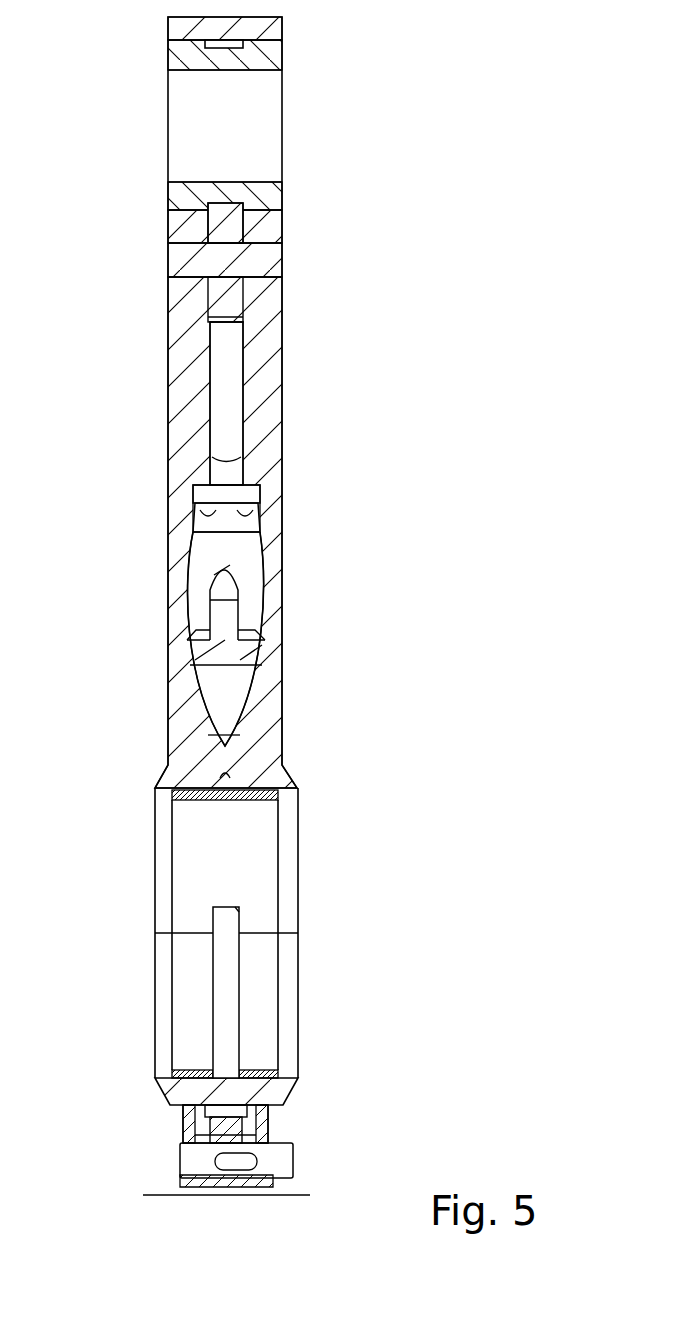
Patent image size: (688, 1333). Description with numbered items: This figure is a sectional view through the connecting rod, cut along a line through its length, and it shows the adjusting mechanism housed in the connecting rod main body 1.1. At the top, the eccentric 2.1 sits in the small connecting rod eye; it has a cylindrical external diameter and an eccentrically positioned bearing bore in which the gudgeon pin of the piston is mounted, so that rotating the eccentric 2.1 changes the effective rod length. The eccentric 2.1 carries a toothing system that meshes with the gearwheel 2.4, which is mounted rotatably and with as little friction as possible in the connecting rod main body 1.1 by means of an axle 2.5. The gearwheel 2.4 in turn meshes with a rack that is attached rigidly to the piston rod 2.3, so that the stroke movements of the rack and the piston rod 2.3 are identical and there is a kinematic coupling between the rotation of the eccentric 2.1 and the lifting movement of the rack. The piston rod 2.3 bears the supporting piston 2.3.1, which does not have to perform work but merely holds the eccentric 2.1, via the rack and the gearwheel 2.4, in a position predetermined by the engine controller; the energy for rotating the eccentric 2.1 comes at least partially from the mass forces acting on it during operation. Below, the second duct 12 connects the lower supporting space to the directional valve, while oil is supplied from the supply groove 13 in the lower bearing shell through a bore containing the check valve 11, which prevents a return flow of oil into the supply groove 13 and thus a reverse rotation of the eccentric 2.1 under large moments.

The connecting rod main body 1.1 is at (277, 372).
The eccentric 2.1 is at (278, 55).
The piston rod 2.3 is at (227, 608).
The supporting piston 2.3.1 is at (247, 653).
The gearwheel 2.4 is at (227, 227).
The axle 2.5 is at (277, 263).
The check valve 11 is at (268, 1117).
The second duct 12 is at (192, 1138).
The supply groove 13 is at (222, 1027).